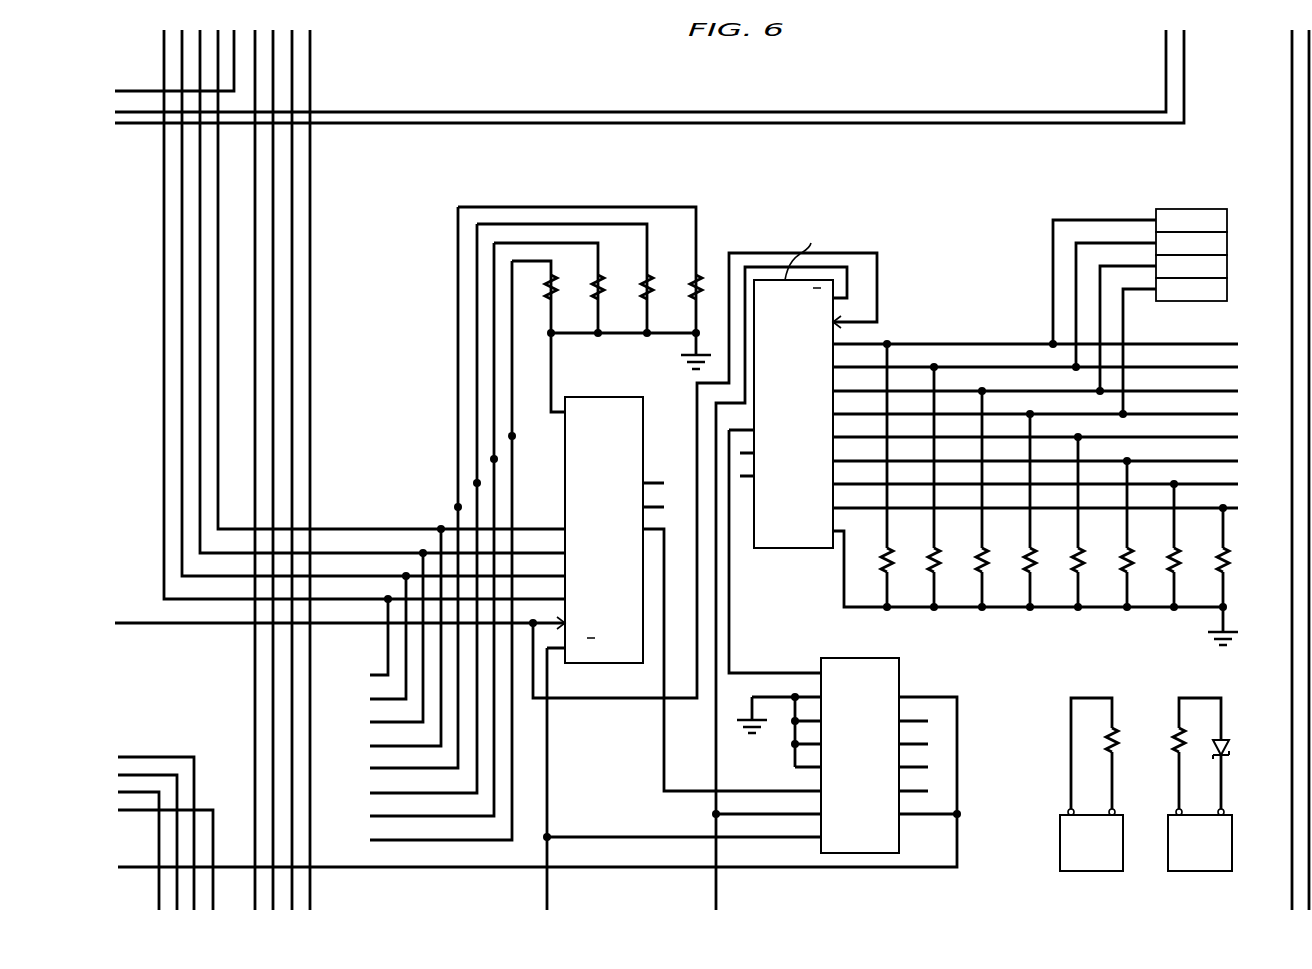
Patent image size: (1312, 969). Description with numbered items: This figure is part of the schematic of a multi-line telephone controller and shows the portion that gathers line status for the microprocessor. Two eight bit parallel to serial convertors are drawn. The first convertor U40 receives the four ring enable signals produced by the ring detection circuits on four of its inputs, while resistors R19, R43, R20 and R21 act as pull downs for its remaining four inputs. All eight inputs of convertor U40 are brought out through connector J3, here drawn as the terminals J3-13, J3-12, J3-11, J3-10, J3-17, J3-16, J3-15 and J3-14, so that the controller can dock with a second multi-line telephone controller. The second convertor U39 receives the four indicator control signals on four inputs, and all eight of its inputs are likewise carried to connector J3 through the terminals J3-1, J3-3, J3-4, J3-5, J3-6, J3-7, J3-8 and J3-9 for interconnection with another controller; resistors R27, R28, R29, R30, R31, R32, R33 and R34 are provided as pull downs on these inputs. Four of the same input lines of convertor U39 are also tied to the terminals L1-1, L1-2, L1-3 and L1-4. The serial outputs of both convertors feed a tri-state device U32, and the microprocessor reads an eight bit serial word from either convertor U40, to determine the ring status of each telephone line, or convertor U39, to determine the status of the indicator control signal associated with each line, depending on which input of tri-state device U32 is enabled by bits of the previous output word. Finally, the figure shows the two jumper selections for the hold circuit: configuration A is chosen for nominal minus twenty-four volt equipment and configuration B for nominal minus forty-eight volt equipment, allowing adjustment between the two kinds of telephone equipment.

The pull-down resistor R19 is at (537, 297).
The pull-down resistor R43 is at (584, 297).
The pull-down resistor R20 is at (633, 297).
The pull-down resistor R21 is at (682, 297).
The pull-down resistor R27 is at (872, 571).
The pull-down resistor R28 is at (919, 571).
The pull-down resistor R29 is at (967, 571).
The pull-down resistor R30 is at (1015, 571).
The pull-down resistor R31 is at (1063, 571).
The pull-down resistor R32 is at (1112, 571).
The pull-down resistor R33 is at (1159, 571).
The pull-down resistor R34 is at (1208, 571).
The 8 bit parallel to serial convertor U40 is at (590, 397).
The 8 bit parallel to serial convertor U39 is at (792, 548).
The tri-state device U32 is at (845, 658).
The connector L1 terminal 1 L1-1 is at (1191, 220).
The connector L1 terminal 2 L1-2 is at (1191, 243).
The connector L1 terminal 3 L1-3 is at (1191, 266).
The connector L1 terminal 4 L1-4 is at (1191, 289).
The connector J3 terminal J3-1 is at (1258, 343).
The connector J3 terminal J3-3 is at (1258, 366).
The connector J3 terminal J3-4 is at (1258, 390).
The connector J3 terminal J3-5 is at (1258, 413).
The connector J3 terminal J3-6 is at (1258, 436).
The connector J3 terminal J3-7 is at (1258, 460).
The connector J3 terminal J3-8 is at (1258, 483).
The connector J3 terminal J3-9 is at (1258, 507).
The connector J3 terminal J3-10 is at (343, 745).
The connector J3 terminal J3-11 is at (343, 721).
The connector J3 terminal J3-12 is at (343, 698).
The connector J3 terminal J3-13 is at (343, 674).
The connector J3 terminal J3-14 is at (343, 839).
The connector J3 terminal J3-15 is at (343, 815).
The connector J3 terminal J3-16 is at (343, 792).
The connector J3 terminal J3-17 is at (343, 767).
The jumper selection A is at (1097, 852).
The jumper selection B is at (1206, 852).